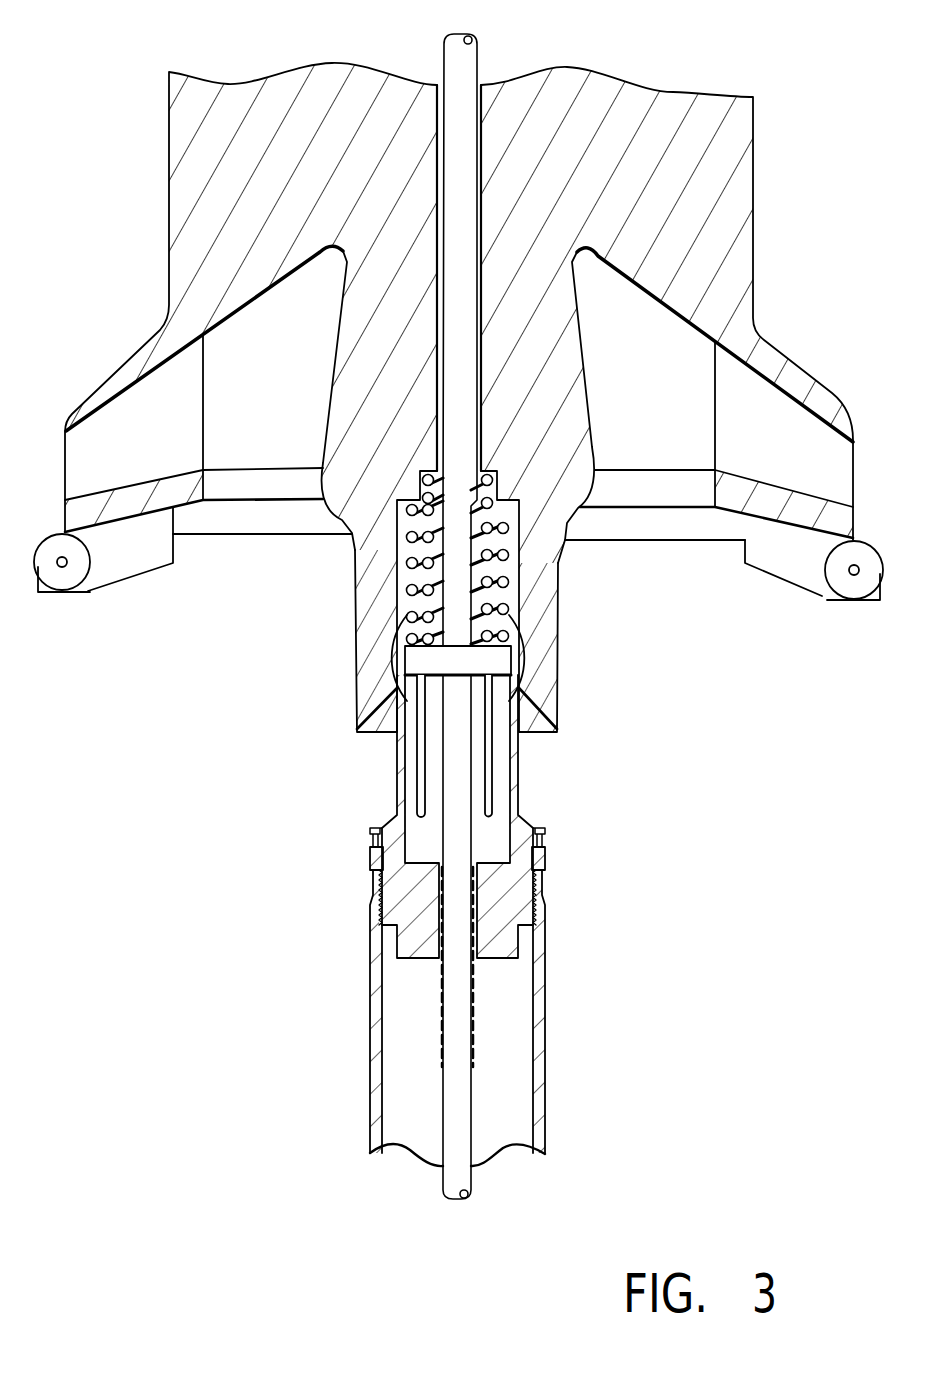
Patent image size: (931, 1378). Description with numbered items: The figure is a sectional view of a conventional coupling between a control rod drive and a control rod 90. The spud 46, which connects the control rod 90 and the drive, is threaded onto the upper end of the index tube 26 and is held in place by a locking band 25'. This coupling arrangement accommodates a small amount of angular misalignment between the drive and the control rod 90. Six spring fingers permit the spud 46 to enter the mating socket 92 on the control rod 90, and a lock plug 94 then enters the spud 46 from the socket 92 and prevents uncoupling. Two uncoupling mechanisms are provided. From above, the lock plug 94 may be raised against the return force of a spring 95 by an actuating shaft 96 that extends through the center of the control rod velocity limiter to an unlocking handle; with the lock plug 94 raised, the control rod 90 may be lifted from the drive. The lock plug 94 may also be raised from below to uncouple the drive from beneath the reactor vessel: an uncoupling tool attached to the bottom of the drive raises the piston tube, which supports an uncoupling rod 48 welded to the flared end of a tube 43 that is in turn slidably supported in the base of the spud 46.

The control rod 90 is at (755, 166).
The socket 92 is at (558, 647).
The lock plug 94 is at (413, 659).
The spring 95 is at (512, 592).
The actuating shaft 96 is at (479, 61).
The spud 46 is at (521, 781).
The uncoupling rod 48 is at (452, 787).
The locking band 25' is at (509, 863).
The index tube 26 is at (545, 1132).
The tube 43 is at (440, 1057).